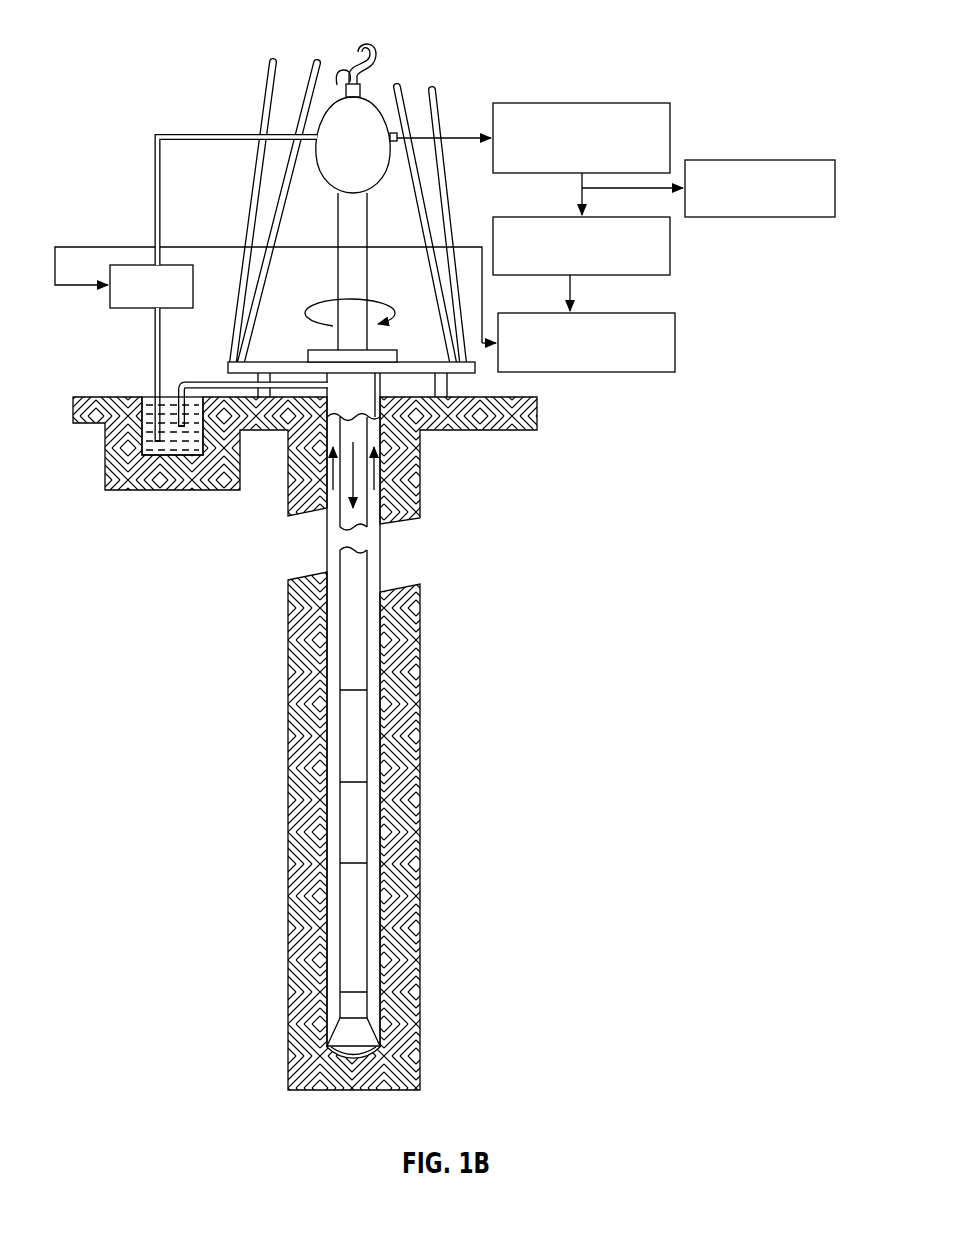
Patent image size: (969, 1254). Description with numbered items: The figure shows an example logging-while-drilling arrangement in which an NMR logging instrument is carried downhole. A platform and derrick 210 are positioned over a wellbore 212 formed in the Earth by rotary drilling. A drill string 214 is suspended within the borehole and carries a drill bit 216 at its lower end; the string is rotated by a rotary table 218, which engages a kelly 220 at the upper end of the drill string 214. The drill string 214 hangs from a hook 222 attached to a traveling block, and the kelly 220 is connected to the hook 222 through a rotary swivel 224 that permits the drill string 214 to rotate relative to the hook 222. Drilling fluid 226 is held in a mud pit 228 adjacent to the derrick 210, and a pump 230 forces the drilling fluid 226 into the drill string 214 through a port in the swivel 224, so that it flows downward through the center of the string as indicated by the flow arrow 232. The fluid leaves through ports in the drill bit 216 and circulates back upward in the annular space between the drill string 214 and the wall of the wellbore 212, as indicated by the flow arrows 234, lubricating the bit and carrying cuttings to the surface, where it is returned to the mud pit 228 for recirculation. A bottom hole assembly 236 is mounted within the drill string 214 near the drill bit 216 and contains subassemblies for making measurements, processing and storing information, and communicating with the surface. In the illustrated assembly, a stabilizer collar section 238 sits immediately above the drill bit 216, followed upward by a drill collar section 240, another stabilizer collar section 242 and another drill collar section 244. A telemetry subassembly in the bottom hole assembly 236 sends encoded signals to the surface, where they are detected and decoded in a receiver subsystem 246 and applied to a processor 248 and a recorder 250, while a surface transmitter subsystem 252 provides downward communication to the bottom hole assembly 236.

The platform and derrick 210 is at (515, 380).
The wellbore 212 is at (383, 500).
The drill string 214 is at (352, 663).
The drill bit 216 is at (342, 1037).
The rotary table 218 is at (390, 350).
The kelly 220 is at (358, 218).
The hook 222 is at (365, 56).
The rotary swivel 224 is at (335, 140).
The drilling fluid 226 is at (157, 456).
The mud pit 228 is at (138, 427).
The pump 230 is at (123, 265).
The flow arrow 232 is at (350, 492).
The flow arrows 234 is at (378, 460).
The bottom hole assembly 236 is at (432, 992).
The stabilizer collar section 238 is at (345, 943).
The drill collar section 240 is at (345, 825).
The stabilizer collar section 242 is at (347, 760).
The drill collar section 244 is at (340, 640).
The receiver subsystem 246 is at (563, 103).
The processor 248 is at (672, 253).
The recorder 250 is at (795, 158).
The surface transmitter subsystem 252 is at (677, 347).